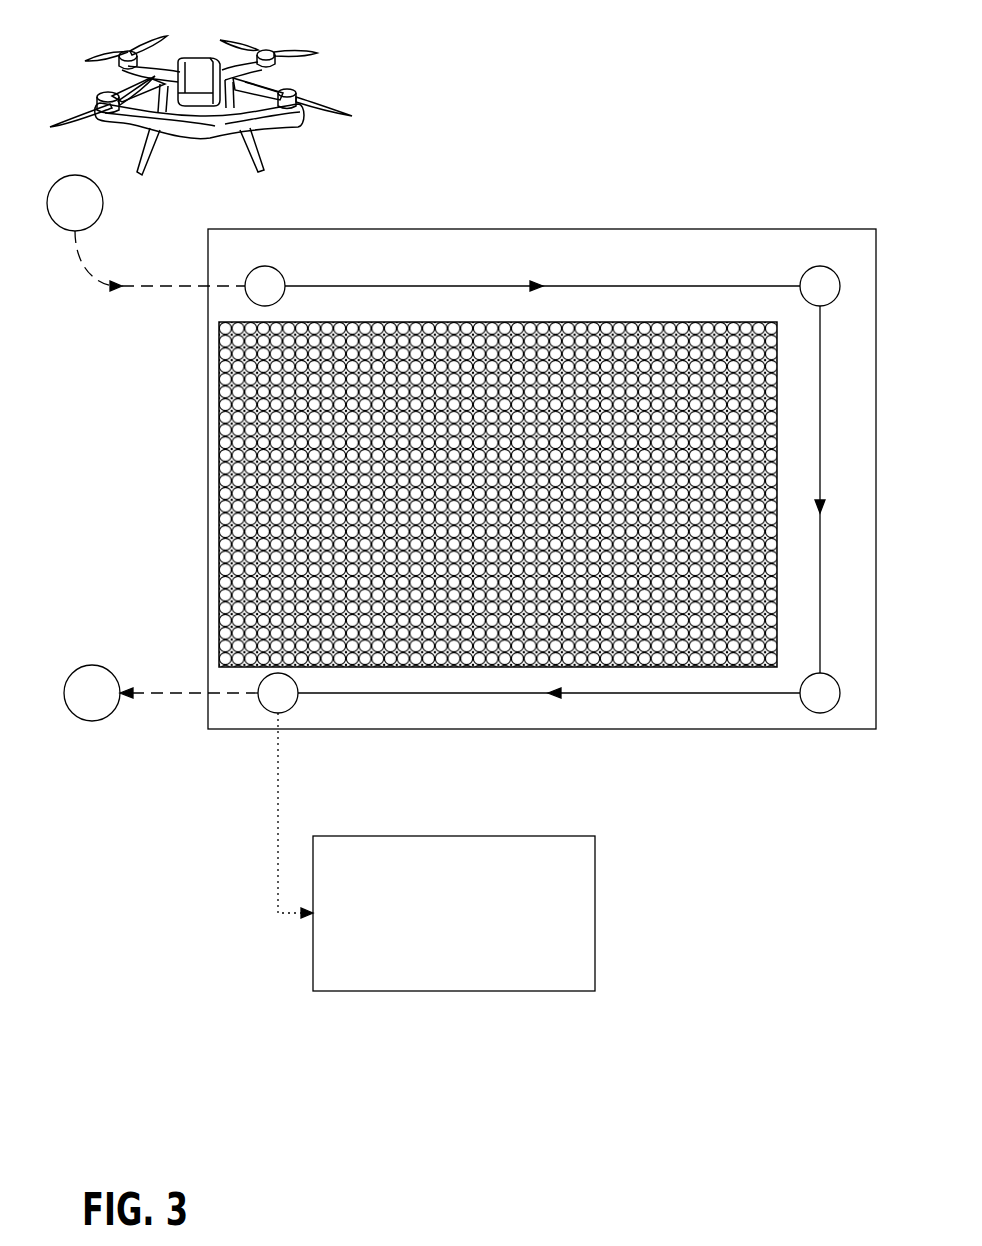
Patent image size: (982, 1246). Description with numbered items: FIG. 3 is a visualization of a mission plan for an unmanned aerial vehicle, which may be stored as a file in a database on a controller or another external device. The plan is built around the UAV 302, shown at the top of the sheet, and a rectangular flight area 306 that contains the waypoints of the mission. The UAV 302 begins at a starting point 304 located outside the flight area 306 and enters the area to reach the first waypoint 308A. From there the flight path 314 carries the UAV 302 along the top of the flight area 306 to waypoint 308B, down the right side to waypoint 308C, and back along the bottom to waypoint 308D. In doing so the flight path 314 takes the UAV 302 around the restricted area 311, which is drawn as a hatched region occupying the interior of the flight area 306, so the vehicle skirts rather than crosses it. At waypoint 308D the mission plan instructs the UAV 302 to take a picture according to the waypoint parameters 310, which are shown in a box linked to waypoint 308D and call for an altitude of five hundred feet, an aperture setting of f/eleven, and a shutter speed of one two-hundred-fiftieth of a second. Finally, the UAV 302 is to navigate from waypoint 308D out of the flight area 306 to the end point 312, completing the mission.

The UAV 302 is at (307, 50).
The starting point 304 is at (98, 212).
The flight area 306 is at (370, 229).
The waypoint 308A is at (281, 273).
The waypoint 308B is at (808, 272).
The waypoint 308C is at (808, 701).
The waypoint 308D is at (293, 707).
The waypoint parameters 310 is at (455, 836).
The restricted area 311 is at (219, 434).
The end point 312 is at (92, 721).
The flight path 314 is at (472, 286).